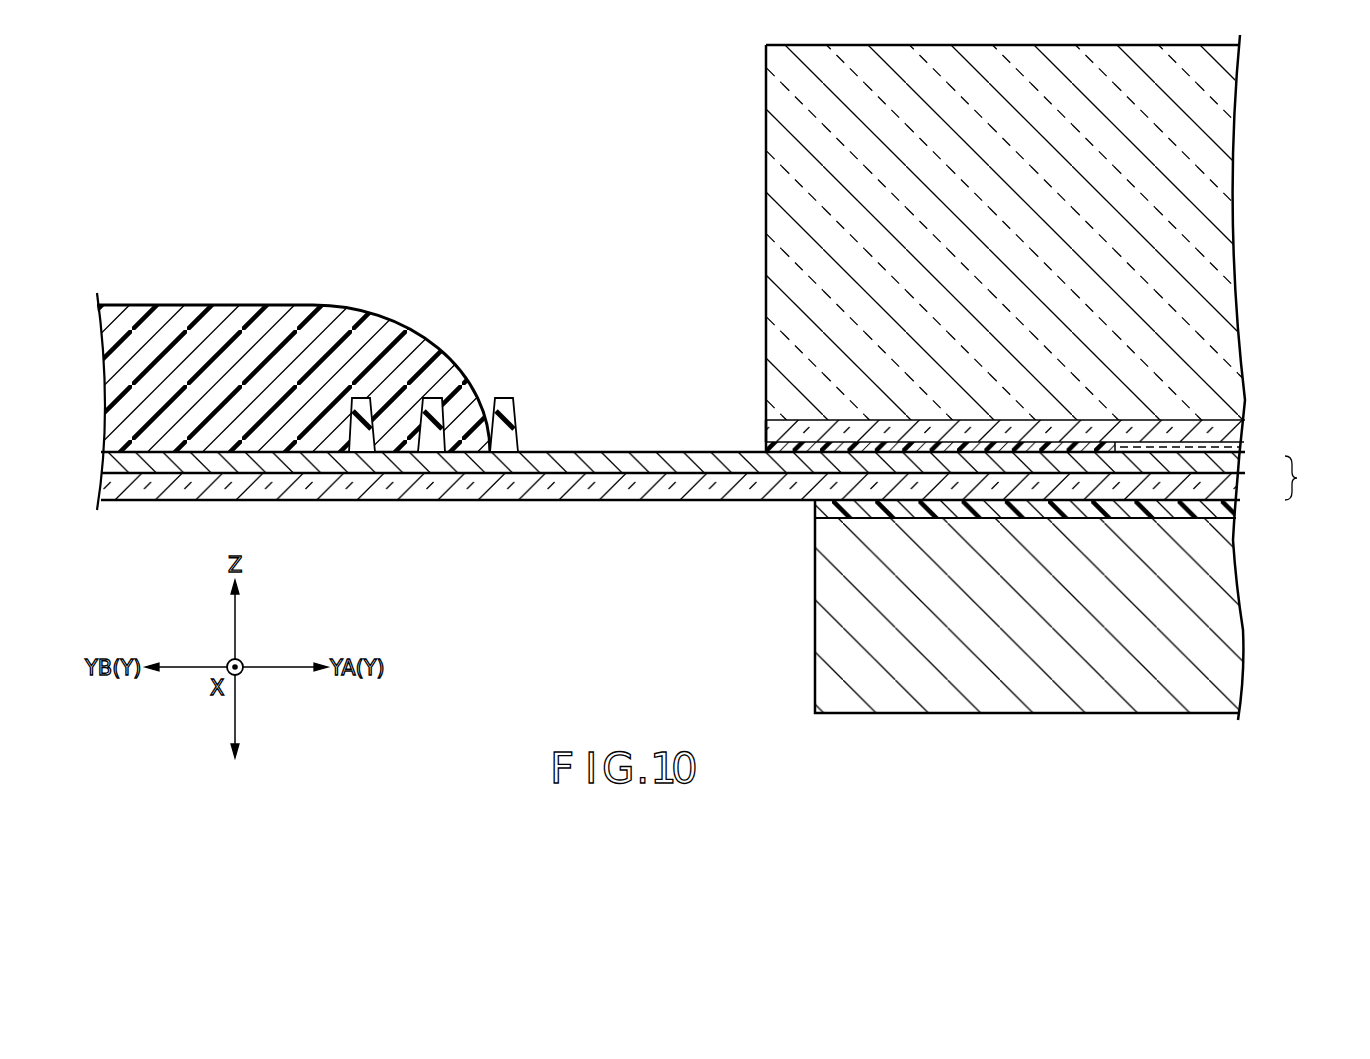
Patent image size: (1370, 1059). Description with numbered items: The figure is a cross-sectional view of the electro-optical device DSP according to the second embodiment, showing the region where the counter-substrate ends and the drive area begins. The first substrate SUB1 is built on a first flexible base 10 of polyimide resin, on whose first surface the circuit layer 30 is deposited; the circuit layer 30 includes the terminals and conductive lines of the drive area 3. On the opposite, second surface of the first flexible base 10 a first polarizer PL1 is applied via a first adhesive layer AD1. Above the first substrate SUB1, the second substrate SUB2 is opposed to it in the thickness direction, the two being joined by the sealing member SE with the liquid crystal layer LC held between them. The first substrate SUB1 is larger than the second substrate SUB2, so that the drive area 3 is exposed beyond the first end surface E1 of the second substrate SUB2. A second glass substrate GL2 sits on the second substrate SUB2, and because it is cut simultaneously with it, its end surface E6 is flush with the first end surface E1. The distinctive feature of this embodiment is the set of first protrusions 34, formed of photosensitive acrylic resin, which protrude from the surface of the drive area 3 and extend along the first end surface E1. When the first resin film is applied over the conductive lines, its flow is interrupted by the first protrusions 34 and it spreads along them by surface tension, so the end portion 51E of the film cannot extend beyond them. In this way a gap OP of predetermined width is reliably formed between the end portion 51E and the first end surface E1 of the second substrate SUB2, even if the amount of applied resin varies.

The end portion of first resin film 51E is at (272, 323).
The first protrusions 34 is at (360, 405).
The gap OP is at (594, 316).
The drive area 3 is at (497, 536).
The second glass substrate GL2 is at (1226, 223).
The end surface of second glass substrate E6 is at (765, 222).
The electro-optical device DSP is at (1264, 379).
The second substrate SUB2 is at (1226, 431).
The first end surface of second substrate E1 is at (765, 430).
The sealing member SE is at (765, 447).
The liquid crystal layer LC is at (1246, 446).
The circuit layer 30 is at (1228, 466).
The first flexible base 10 is at (1230, 488).
The first substrate SUB1 is at (1321, 478).
The first adhesive layer AD1 is at (1222, 508).
The first polarizer PL1 is at (1228, 626).